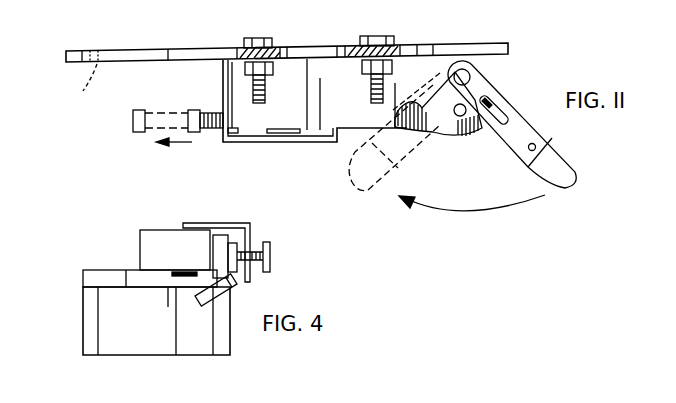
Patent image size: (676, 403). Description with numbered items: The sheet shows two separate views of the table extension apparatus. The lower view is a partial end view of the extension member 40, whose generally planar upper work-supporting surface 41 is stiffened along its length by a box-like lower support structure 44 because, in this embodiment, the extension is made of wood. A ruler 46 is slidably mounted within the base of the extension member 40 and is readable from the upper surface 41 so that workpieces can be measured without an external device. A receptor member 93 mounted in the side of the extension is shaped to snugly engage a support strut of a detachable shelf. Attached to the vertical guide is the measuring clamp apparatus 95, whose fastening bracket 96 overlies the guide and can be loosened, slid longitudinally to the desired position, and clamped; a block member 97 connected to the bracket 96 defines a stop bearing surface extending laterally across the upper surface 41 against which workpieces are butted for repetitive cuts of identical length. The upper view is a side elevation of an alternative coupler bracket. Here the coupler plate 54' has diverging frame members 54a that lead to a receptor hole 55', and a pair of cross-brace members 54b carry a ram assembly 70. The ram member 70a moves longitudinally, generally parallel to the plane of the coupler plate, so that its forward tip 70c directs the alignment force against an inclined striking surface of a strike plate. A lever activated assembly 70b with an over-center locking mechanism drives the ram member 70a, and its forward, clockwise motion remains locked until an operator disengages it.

In FIG. 11, the coupler plate 54' is at (287, 36).
In FIG. 11, the receptor hole 55' is at (75, 84).
In FIG. 11, the diverging frame member 54a is at (166, 49).
In FIG. 11, the cross-brace member 54b is at (278, 48).
In FIG. 11, the ram assembly 70 is at (303, 153).
In FIG. 11, the ram member 70a is at (210, 130).
In FIG. 11, the lever activated assembly 70b is at (545, 136).
In FIG. 11, the forward tip 70c is at (189, 112).
In FIG. 4, the extension member 40 is at (118, 242).
In FIG. 4, the upper work-supporting surface 41 is at (93, 270).
In FIG. 4, the box-like lower support structure 44 is at (92, 321).
In FIG. 4, the ruler 46 is at (188, 272).
In FIG. 4, the receptor member 93 is at (232, 292).
In FIG. 4, the measuring clamp apparatus 95 is at (224, 228).
In FIG. 4, the fastening bracket 96 is at (251, 240).
In FIG. 4, the block member 97 is at (166, 238).